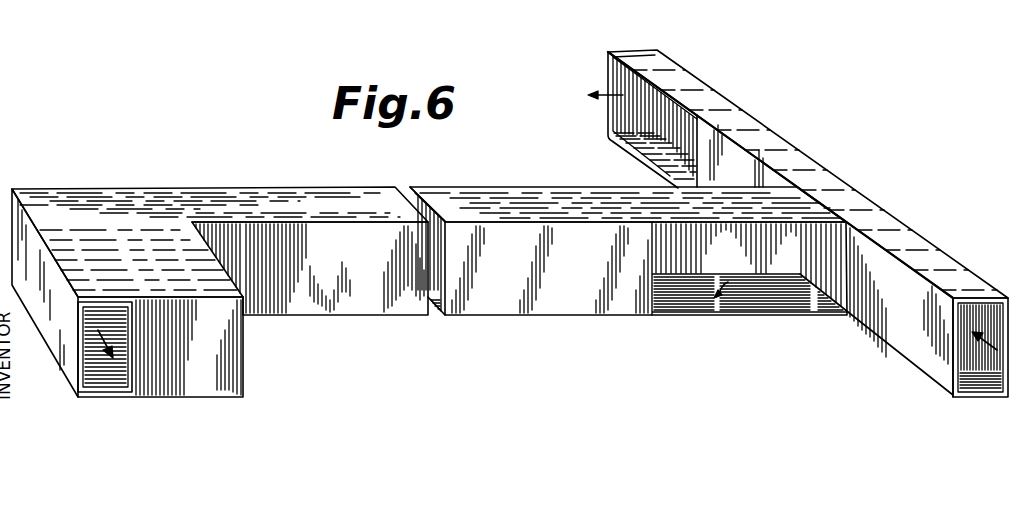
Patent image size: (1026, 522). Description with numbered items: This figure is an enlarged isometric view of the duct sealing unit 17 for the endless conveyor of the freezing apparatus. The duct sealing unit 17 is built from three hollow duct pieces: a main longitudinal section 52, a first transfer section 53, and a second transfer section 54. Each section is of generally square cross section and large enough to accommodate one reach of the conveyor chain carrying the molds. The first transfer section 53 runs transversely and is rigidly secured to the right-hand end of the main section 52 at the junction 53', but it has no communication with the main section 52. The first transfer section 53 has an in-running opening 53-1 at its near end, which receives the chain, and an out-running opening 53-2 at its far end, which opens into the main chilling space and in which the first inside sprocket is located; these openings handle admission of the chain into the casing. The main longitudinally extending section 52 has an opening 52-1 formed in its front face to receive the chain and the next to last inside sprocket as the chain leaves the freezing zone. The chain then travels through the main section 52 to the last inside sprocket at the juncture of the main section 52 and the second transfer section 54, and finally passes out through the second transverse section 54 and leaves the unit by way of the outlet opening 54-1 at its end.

The duct sealing unit 17 is at (485, 188).
The main longitudinal section 52 is at (296, 187).
The opening 52-1 is at (753, 305).
The first transfer section 53 is at (808, 223).
The securing point of first transfer section 53' is at (851, 259).
The in-running opening 53-1 is at (963, 378).
The out-running opening 53-2 is at (628, 137).
The second transfer section 54 is at (245, 333).
The outlet opening 54-1 is at (115, 387).